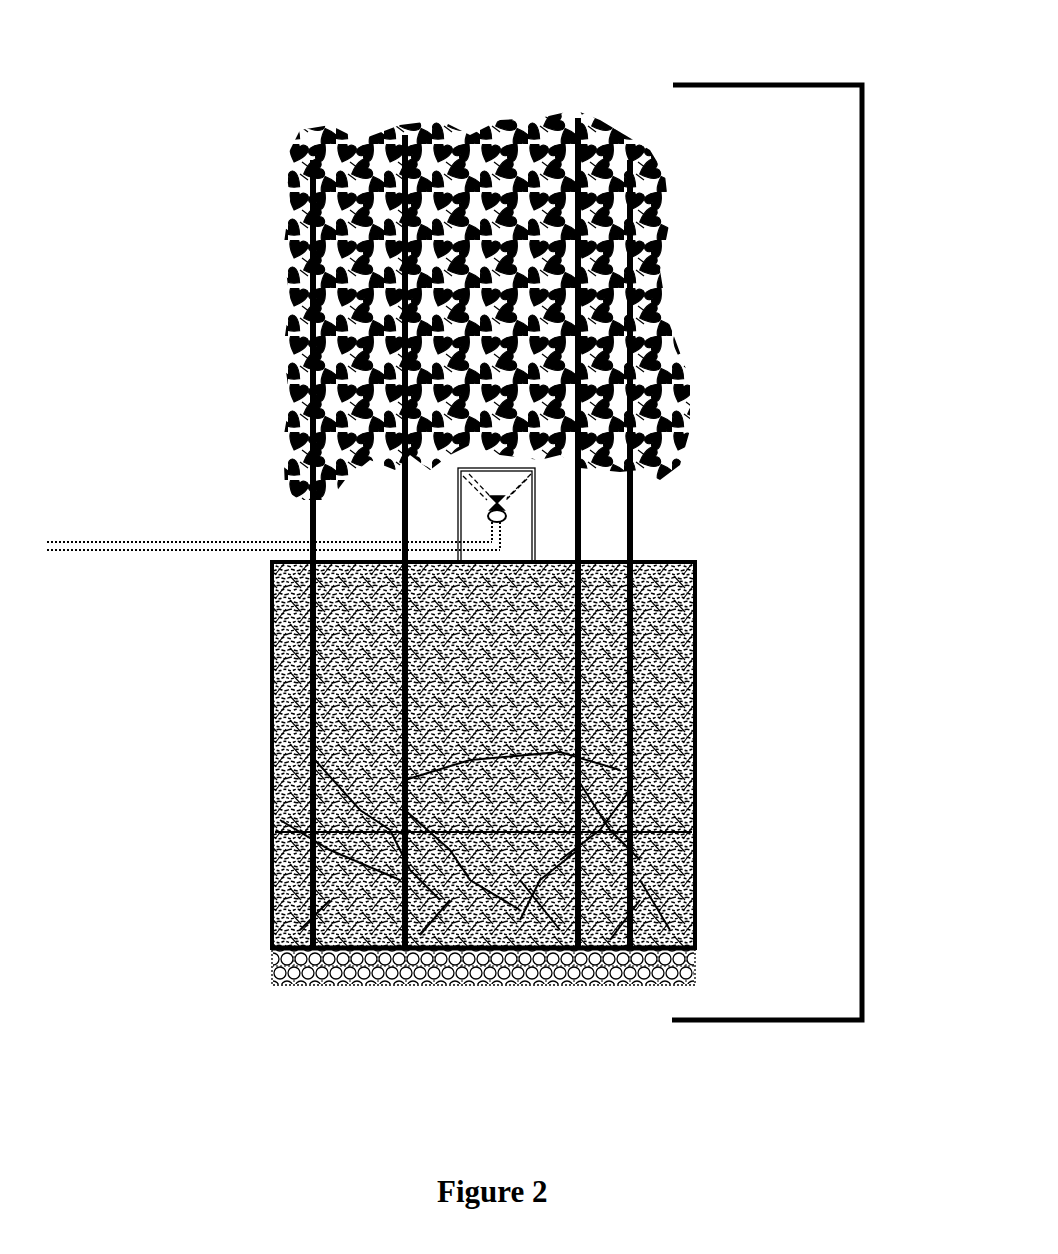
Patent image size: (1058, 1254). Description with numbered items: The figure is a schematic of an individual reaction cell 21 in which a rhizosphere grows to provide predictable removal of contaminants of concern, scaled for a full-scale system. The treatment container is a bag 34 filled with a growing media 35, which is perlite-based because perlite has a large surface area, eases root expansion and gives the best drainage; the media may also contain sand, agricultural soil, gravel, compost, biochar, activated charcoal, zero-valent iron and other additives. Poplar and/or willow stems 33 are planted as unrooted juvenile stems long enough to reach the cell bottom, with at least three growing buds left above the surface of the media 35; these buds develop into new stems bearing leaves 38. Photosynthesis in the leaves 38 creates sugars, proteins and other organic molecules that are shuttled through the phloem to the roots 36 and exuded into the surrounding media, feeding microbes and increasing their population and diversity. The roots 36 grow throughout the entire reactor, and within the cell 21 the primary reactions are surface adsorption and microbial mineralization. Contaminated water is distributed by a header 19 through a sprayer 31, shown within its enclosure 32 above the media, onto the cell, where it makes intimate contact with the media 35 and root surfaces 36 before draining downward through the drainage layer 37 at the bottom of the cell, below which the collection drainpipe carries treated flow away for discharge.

The header 19 is at (218, 540).
The reaction cell 21 is at (866, 262).
The sprayer 31 is at (504, 506).
The sprinkler enclosure 32 is at (540, 528).
The stems 33 is at (634, 548).
The bag 34 is at (698, 748).
The growing media 35 is at (290, 733).
The roots 36 is at (310, 875).
The drainage layer 37 is at (697, 957).
The leaves 38 is at (468, 128).